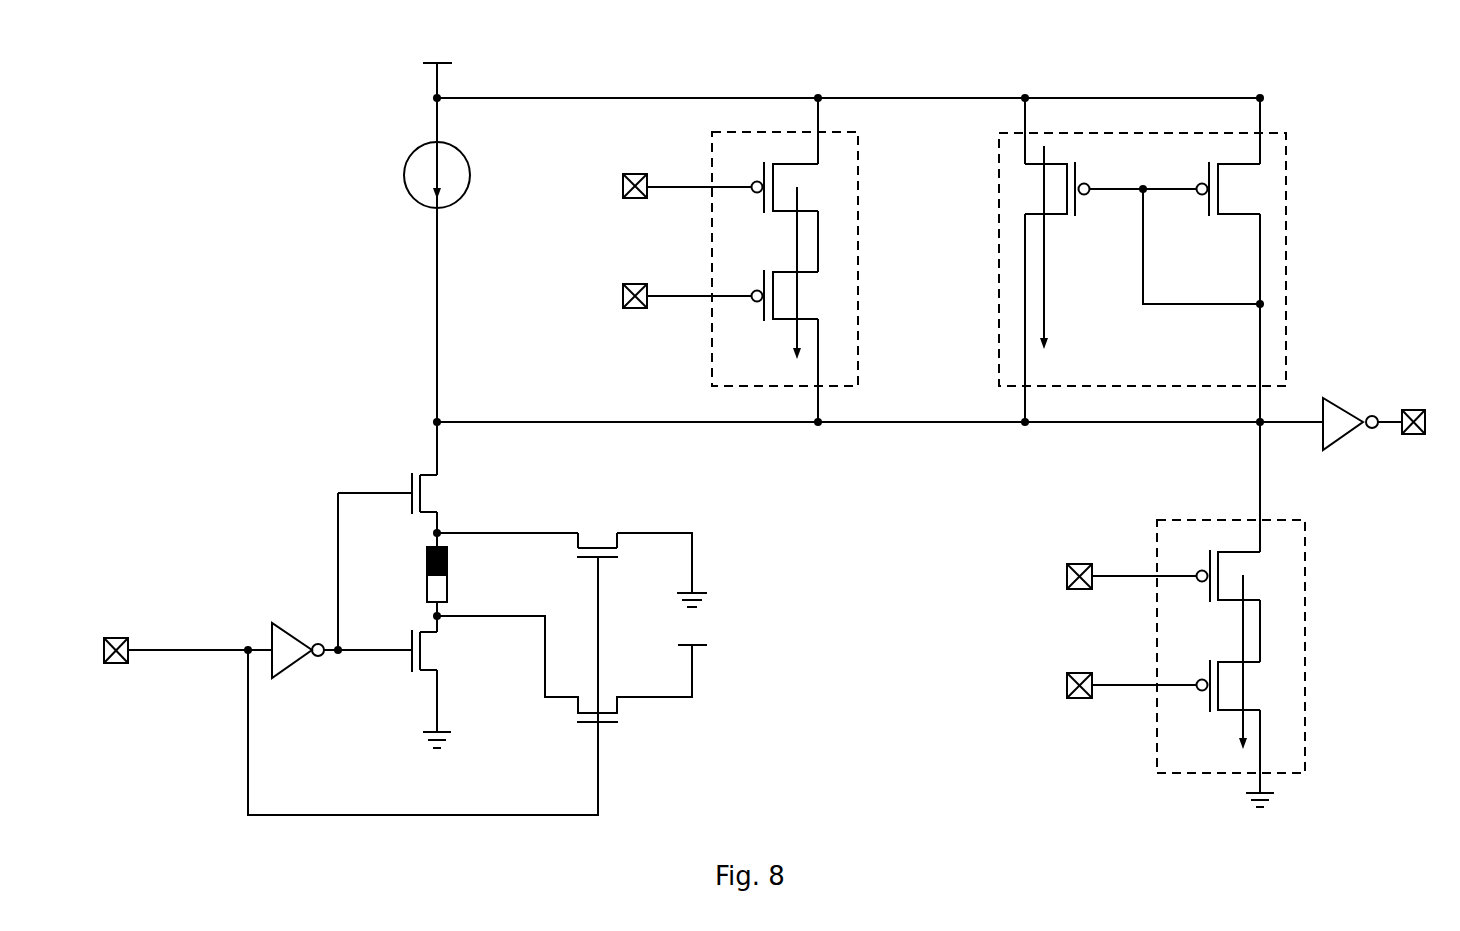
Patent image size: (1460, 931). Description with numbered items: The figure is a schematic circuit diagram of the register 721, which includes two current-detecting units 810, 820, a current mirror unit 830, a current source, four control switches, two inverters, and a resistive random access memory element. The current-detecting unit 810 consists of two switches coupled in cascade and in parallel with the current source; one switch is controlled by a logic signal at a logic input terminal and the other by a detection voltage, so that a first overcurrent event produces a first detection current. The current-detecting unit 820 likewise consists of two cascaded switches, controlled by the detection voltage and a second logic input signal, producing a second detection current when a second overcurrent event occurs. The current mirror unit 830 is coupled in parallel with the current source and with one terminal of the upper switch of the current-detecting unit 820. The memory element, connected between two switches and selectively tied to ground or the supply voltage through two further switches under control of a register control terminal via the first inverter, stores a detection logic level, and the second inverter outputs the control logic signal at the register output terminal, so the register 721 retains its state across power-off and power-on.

The register 721 is at (834, 792).
The current-detecting unit 810 is at (837, 387).
The current mirror unit 830 is at (1155, 388).
The current-detecting unit 820 is at (1305, 648).